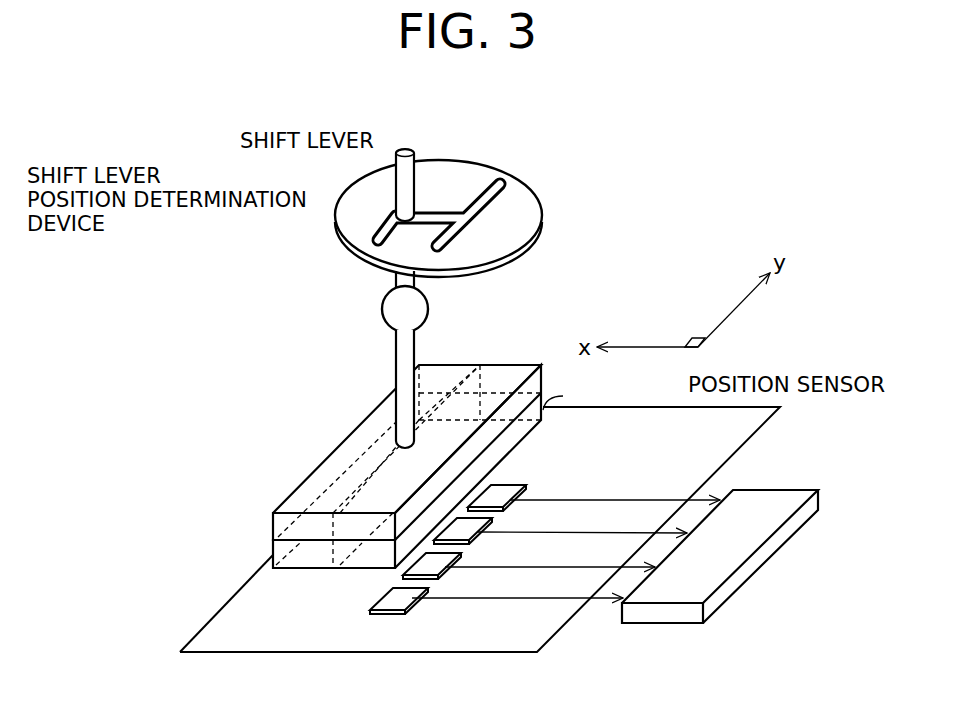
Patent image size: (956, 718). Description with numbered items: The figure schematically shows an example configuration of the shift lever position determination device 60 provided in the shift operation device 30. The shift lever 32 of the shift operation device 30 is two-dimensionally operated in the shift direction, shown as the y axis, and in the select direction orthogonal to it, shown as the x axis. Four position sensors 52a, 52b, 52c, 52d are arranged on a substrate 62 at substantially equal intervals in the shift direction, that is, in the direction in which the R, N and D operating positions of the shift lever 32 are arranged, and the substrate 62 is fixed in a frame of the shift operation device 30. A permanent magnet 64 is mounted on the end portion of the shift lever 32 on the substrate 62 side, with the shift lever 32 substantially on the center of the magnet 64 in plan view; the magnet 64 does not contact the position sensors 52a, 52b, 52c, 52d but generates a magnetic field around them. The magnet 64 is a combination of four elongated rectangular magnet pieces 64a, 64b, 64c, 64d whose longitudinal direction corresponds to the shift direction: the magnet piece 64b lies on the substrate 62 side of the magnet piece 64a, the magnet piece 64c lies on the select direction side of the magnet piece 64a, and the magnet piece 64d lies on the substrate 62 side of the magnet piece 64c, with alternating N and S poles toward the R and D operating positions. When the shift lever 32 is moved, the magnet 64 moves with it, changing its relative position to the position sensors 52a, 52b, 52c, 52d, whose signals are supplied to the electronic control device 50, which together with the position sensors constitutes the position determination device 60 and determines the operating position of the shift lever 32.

The shift operation device 30 is at (478, 143).
The shift lever 32 is at (401, 178).
The electronic control device 50 is at (790, 497).
The position sensor 52a is at (507, 490).
The position sensor 52b is at (452, 530).
The position sensor 52c is at (400, 570).
The position sensor 52d is at (390, 597).
The shift lever position determination device 60 is at (280, 253).
The substrate 62 is at (218, 632).
The permanent magnet 64 is at (413, 445).
The magnet piece 64a is at (290, 508).
The magnet piece 64b is at (273, 551).
The magnet piece 64c is at (513, 372).
The magnet piece 64d is at (532, 428).